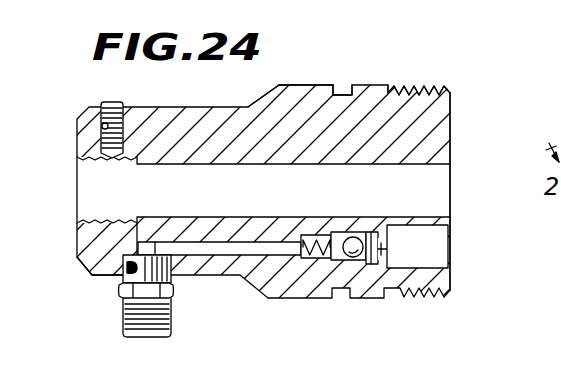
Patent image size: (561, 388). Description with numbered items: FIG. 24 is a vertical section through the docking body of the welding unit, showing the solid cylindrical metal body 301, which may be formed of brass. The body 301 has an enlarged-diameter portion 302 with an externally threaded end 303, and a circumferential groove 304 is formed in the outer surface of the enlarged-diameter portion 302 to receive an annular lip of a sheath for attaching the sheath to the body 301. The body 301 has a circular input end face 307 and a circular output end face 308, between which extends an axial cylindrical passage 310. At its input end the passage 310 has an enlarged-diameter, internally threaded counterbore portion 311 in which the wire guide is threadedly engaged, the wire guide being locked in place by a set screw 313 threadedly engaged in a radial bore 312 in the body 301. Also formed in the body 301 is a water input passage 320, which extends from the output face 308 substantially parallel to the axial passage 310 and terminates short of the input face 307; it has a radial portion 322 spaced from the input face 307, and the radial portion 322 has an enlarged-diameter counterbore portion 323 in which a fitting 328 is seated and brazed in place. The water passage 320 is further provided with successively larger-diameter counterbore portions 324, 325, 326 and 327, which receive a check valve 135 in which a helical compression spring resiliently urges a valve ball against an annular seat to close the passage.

The check valve 135 is at (341, 222).
The cylindrical metal body 301 is at (200, 106).
The enlarged-diameter portion 302 is at (300, 84).
The externally threaded end 303 is at (444, 67).
The circumferential groove 304 is at (338, 93).
The circular input end face 307 is at (76, 246).
The circular output end face 308 is at (452, 127).
The axial cylindrical passage 310 is at (433, 165).
The internally-threaded counterbore portion 311 is at (98, 220).
The radial bore 312 is at (100, 117).
The set screw 313 is at (112, 100).
The water input passage 320 is at (201, 249).
The radial portion 322 is at (143, 241).
The enlarged-diameter counterbore portion 323 is at (114, 275).
The counterbore portion 324 is at (320, 262).
The counterbore portion 325 is at (340, 233).
The counterbore portion 326 is at (378, 231).
The counterbore portion 327 is at (431, 270).
The fitting 328 is at (145, 338).